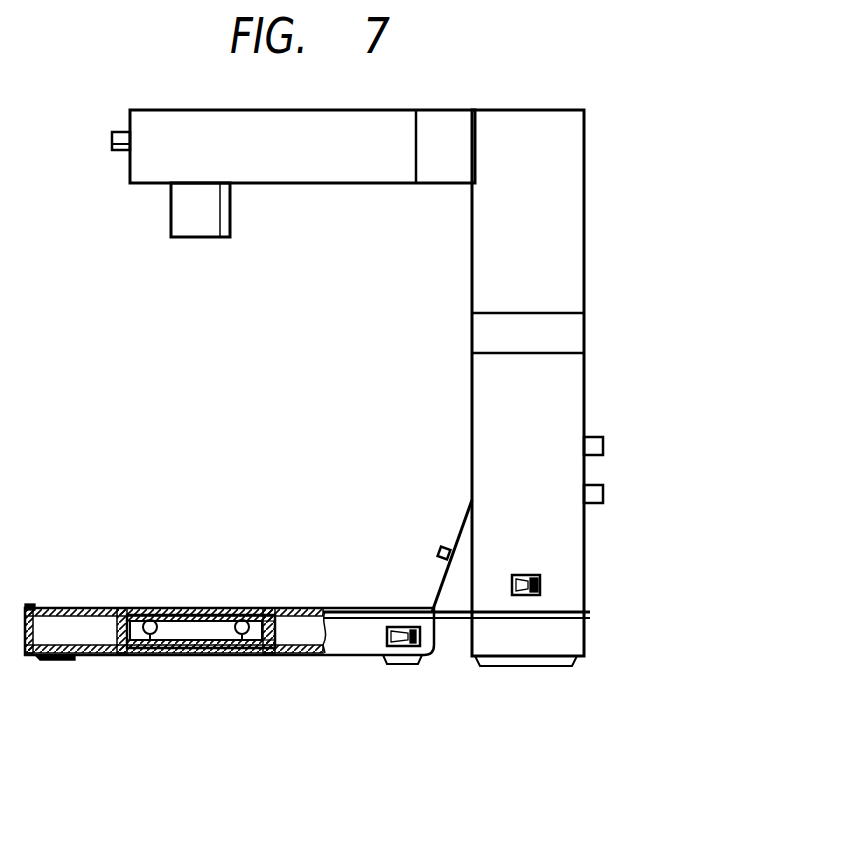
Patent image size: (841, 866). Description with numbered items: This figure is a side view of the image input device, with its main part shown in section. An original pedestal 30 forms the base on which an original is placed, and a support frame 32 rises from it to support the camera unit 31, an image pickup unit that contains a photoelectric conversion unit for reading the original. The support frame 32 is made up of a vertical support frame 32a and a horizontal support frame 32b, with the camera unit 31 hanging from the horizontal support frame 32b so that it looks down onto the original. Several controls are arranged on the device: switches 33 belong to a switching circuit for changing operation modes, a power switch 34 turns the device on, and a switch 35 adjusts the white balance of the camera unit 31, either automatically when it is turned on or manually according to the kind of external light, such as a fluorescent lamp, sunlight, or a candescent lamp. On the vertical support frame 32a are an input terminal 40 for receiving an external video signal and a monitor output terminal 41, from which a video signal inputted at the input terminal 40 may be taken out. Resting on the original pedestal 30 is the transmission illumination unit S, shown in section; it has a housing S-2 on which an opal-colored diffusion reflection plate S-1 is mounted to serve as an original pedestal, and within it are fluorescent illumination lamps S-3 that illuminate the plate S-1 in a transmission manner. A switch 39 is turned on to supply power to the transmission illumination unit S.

The original pedestal 30 is at (52, 607).
The camera unit 31 is at (171, 212).
The support frame 32 is at (401, 388).
The vertical support frame 32a is at (557, 209).
The horizontal support frame 32b is at (382, 172).
The switches 33 is at (442, 546).
The power switch 34 is at (540, 585).
The white balance switch 35 is at (112, 148).
The switch 39 is at (405, 646).
The input terminal 40 is at (603, 447).
The monitor output terminal 41 is at (603, 494).
The transmission illumination unit S is at (200, 623).
The diffusion reflection plate S-1 is at (222, 610).
The housing S-2 is at (132, 607).
The illumination lamps S-3 is at (237, 653).